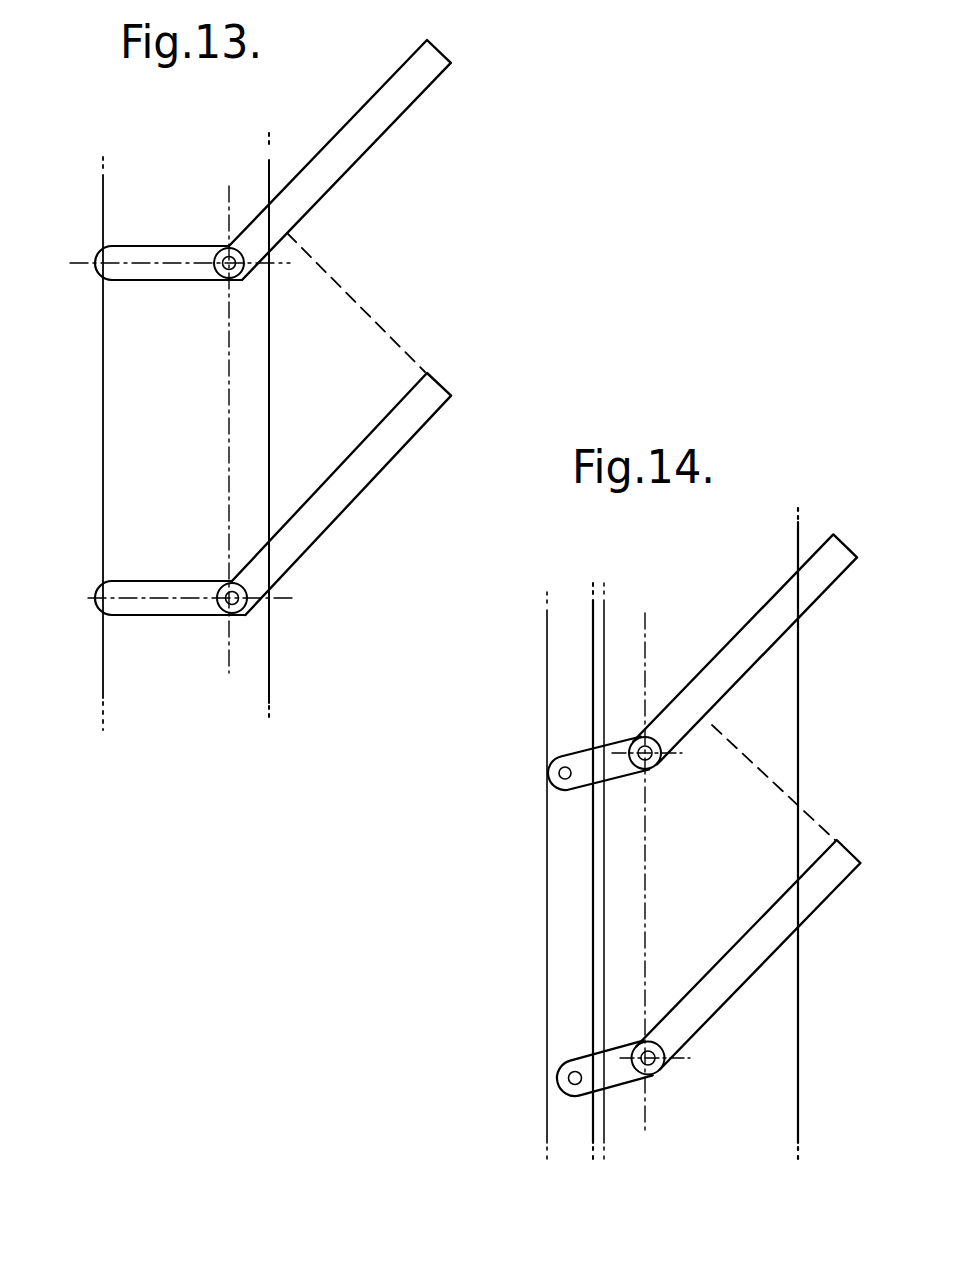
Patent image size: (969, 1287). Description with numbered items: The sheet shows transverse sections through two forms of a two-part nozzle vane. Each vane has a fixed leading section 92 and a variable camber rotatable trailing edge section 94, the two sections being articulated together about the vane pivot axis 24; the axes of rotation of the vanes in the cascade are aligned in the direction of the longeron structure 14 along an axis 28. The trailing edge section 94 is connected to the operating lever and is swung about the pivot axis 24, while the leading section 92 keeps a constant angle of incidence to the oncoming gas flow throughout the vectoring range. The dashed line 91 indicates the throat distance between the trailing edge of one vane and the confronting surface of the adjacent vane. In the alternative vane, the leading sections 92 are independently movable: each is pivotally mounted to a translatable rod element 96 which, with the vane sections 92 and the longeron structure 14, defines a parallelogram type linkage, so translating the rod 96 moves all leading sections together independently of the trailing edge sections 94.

In FIG. 13, the longeron 14 is at (103, 431).
In FIG. 14, the longeron 14 is at (605, 840).
In FIG. 13, the spanwise axis of rotation 24 is at (226, 279).
In FIG. 14, the spanwise axis of rotation 24 is at (650, 737).
In FIG. 13, the axis 28 is at (229, 200).
In FIG. 14, the axis 28 is at (645, 623).
In FIG. 13, the line 91 is at (386, 331).
In FIG. 14, the line 91 is at (815, 820).
In FIG. 13, the leading section 92 is at (163, 282).
In FIG. 14, the leading section 92 is at (630, 775).
In FIG. 13, the trailing edge section 94 is at (388, 130).
In FIG. 14, the trailing edge section 94 is at (817, 601).
In FIG. 14, the translatable rod element 96 is at (549, 933).